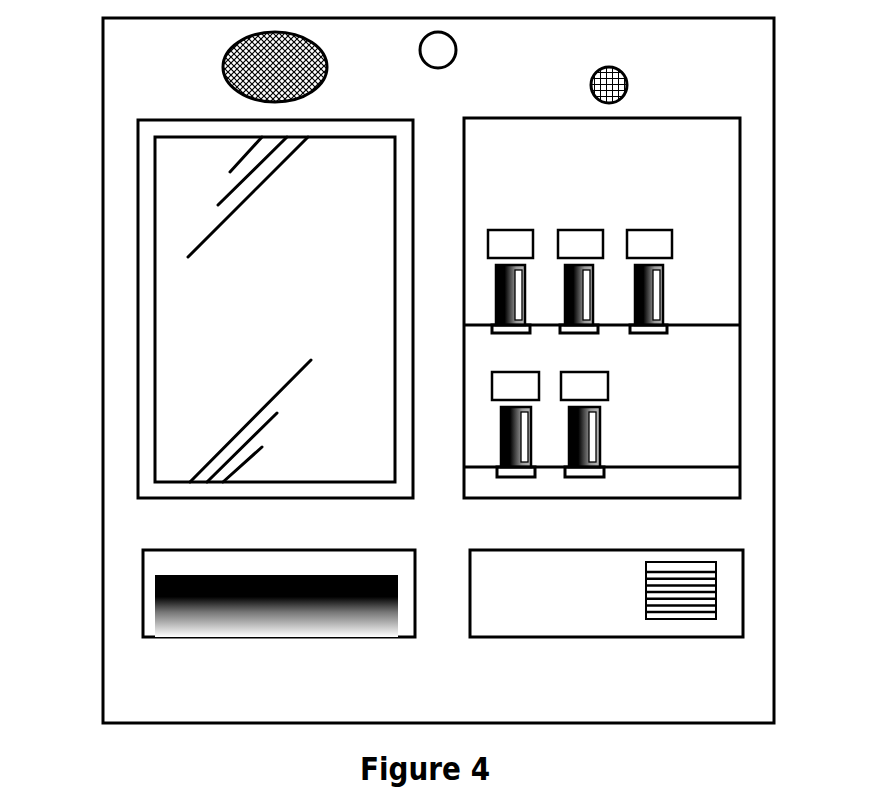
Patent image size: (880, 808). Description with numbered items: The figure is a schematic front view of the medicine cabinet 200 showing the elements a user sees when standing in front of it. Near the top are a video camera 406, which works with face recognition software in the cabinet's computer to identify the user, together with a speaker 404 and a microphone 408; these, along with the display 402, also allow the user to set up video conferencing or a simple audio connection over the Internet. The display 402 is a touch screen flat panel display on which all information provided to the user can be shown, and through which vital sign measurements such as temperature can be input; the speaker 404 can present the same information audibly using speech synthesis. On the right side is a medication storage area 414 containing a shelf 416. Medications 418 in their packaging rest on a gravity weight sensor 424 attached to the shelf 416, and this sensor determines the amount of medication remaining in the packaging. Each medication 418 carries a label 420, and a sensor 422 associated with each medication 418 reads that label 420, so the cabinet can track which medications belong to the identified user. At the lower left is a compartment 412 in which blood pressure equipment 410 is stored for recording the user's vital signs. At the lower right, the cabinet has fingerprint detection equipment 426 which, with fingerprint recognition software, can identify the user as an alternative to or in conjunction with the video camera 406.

The medicine cabinet 200 is at (546, 689).
The display 402 is at (188, 290).
The speaker 404 is at (225, 80).
The video camera 406 is at (458, 50).
The microphone 408 is at (630, 85).
The blood pressure equipment 410 is at (154, 606).
The compartment 412 is at (142, 571).
The medication storage area 414 is at (742, 185).
The shelf 416 is at (712, 327).
The medication 418 is at (667, 264).
The label 420 is at (665, 283).
The sensor 422 is at (674, 245).
The gravity weight sensor 424 is at (664, 335).
The fingerprint detection equipment 426 is at (718, 585).